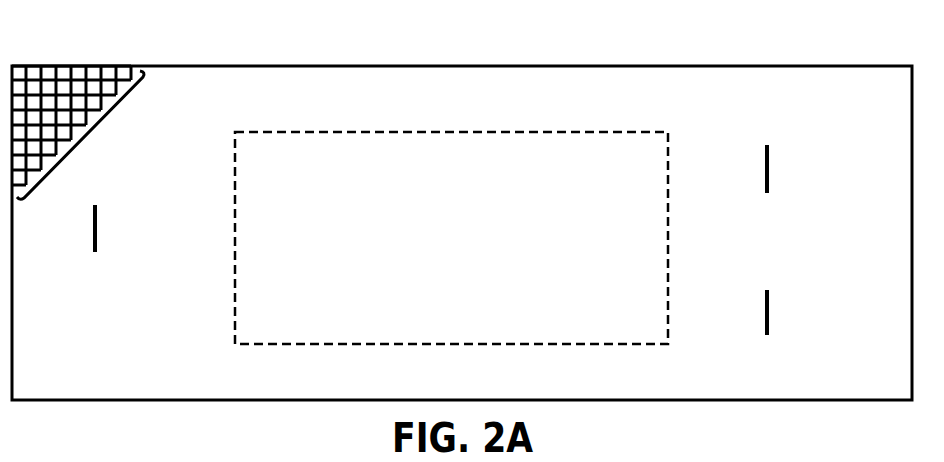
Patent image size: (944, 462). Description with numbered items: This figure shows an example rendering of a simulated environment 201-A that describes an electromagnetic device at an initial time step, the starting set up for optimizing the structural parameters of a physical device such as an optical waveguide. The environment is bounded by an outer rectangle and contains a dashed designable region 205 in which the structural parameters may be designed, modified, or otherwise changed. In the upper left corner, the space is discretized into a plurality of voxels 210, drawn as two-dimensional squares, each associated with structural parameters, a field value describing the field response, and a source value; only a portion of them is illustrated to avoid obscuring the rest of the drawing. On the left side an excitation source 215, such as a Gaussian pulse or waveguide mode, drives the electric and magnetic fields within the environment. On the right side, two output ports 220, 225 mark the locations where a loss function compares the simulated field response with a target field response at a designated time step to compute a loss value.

The simulated environment 201-A is at (84, 57).
The designable region 205 is at (451, 219).
The plurality of voxels 210 is at (91, 133).
The excitation source 215 is at (94, 258).
The output port 220 is at (768, 198).
The output port 225 is at (768, 338).